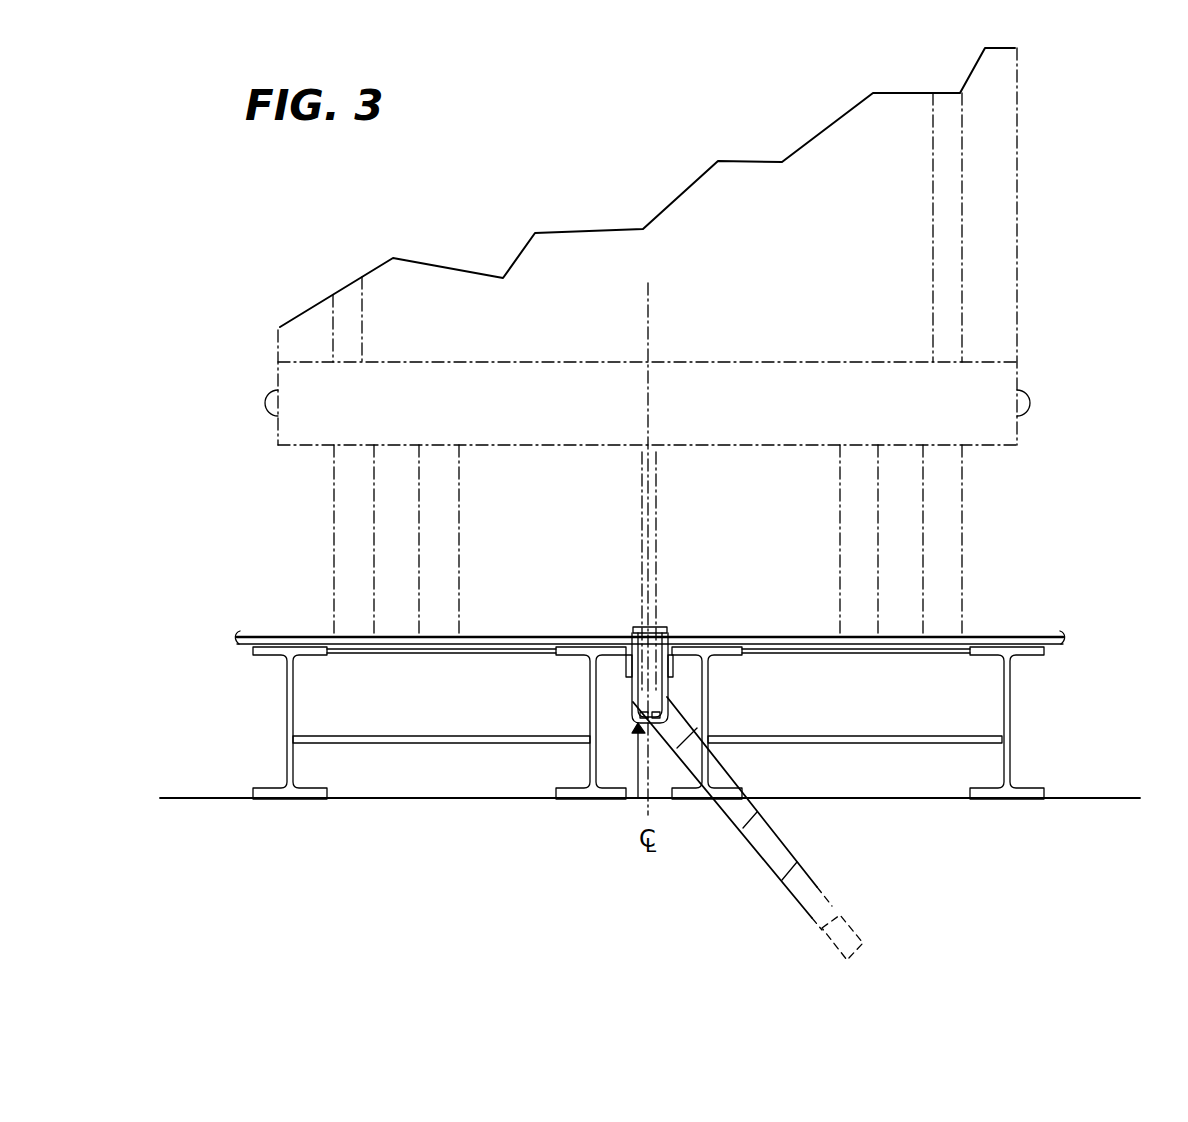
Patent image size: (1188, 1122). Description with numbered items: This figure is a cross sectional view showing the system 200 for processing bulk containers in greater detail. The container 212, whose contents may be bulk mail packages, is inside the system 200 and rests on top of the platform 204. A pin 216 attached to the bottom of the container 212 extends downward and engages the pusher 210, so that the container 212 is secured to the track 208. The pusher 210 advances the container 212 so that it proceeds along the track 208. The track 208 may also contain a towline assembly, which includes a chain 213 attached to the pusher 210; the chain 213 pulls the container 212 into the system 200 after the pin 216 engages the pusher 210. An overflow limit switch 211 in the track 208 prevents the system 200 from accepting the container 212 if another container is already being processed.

The system 200 is at (566, 145).
The platform 204 is at (1003, 634).
The track 208 is at (607, 725).
The pusher 210 is at (665, 622).
The overflow limit switch 211 is at (638, 755).
The container 212 is at (605, 258).
The chain 213 is at (808, 868).
The pin 216 is at (650, 516).